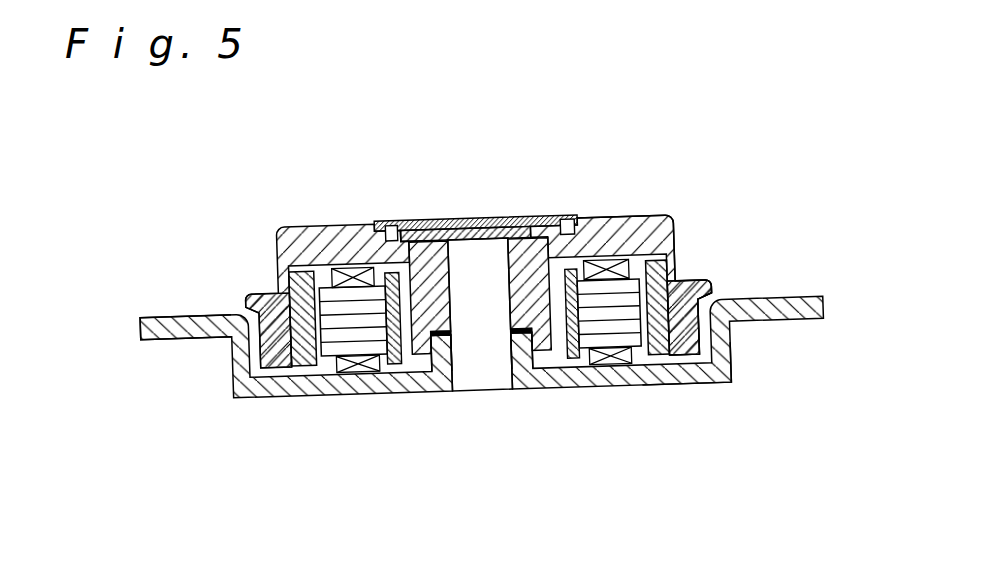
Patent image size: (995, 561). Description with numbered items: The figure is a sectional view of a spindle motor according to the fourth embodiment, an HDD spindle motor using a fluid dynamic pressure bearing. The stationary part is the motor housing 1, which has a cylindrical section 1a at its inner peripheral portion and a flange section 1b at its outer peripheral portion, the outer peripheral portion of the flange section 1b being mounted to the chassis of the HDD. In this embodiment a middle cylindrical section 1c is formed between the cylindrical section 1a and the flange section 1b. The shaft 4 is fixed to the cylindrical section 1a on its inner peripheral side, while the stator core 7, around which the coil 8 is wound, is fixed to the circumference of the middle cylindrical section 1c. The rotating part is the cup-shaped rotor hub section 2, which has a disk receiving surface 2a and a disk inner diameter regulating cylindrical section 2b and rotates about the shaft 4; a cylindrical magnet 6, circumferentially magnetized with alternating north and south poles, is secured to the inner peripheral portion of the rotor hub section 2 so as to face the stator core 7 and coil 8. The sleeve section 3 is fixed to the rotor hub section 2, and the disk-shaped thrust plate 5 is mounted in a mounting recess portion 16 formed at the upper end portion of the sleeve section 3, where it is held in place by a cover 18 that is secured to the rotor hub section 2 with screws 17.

The motor housing 1 is at (583, 376).
The cylindrical section 1a is at (446, 357).
The flange section 1b is at (182, 336).
The middle cylindrical section 1c is at (391, 328).
The rotor hub section 2 is at (637, 224).
The disk receiving surface 2a is at (713, 292).
The disk inner diameter regulating cylindrical section 2b is at (678, 220).
The sleeve section 3 is at (523, 250).
The shaft 4 is at (491, 377).
The thrust plate 5 is at (470, 218).
The magnet 6 is at (670, 388).
The stator core 7 is at (672, 280).
The coil 8 is at (613, 364).
The mounting recess portion 16 is at (438, 220).
The screws 17 is at (383, 221).
The cover 18 is at (425, 220).